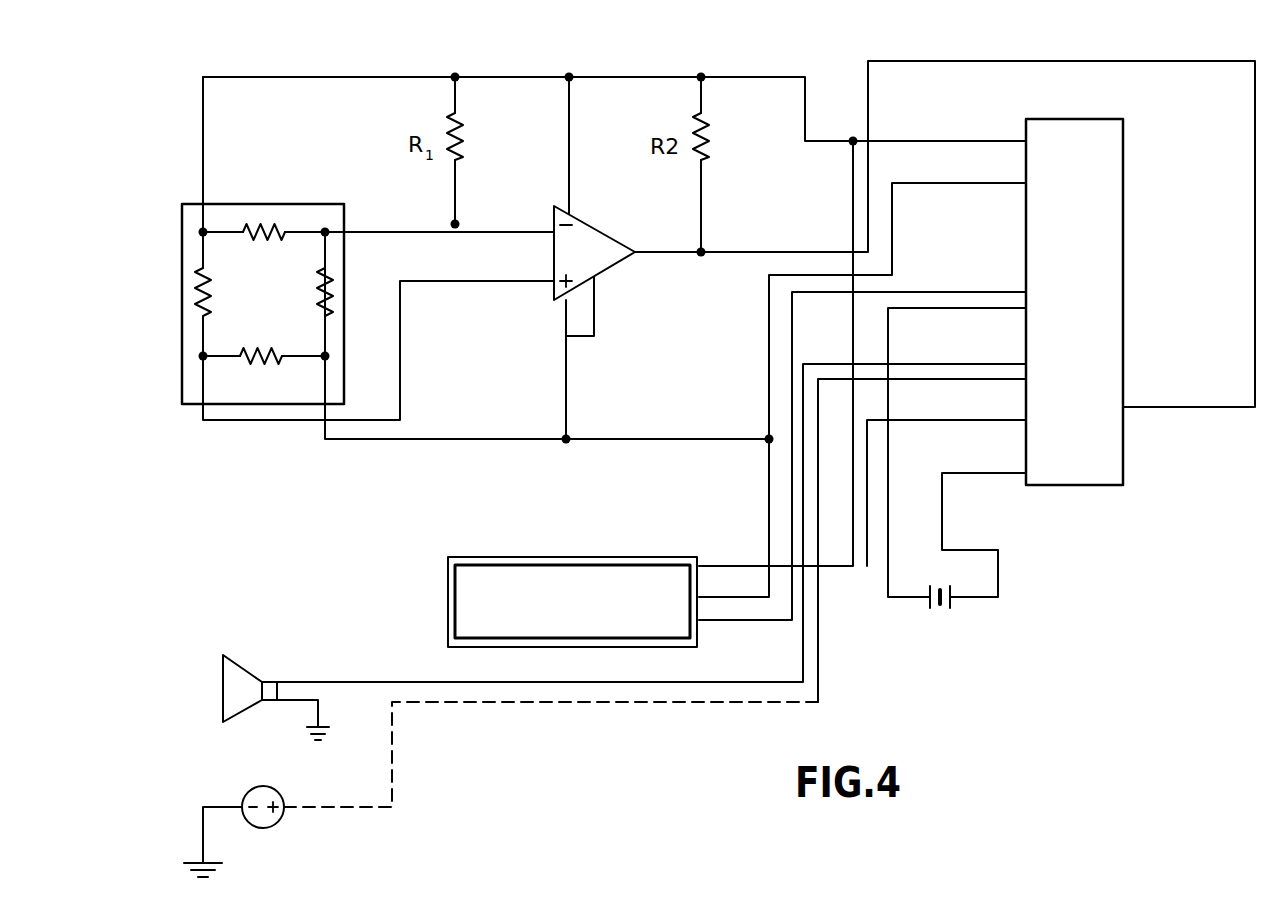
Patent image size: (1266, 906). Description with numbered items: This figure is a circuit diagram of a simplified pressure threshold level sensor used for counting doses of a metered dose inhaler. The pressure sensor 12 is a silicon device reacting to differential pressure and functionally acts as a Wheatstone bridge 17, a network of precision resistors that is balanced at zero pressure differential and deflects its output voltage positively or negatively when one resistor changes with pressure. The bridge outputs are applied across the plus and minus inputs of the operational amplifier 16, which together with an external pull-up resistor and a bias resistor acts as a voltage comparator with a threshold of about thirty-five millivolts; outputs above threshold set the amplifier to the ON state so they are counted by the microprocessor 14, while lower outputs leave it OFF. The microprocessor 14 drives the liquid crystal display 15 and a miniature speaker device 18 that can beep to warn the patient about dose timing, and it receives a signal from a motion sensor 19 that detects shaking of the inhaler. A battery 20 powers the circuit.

The pressure sensor 12 is at (305, 203).
The microprocessor 14 is at (1123, 270).
The liquid crystal display 15 is at (553, 556).
The operational amplifier 16 is at (627, 263).
The Wheatstone bridge 17 is at (225, 322).
The speaker device 18 is at (243, 668).
The motion sensor 19 is at (280, 795).
The battery 20 is at (940, 612).